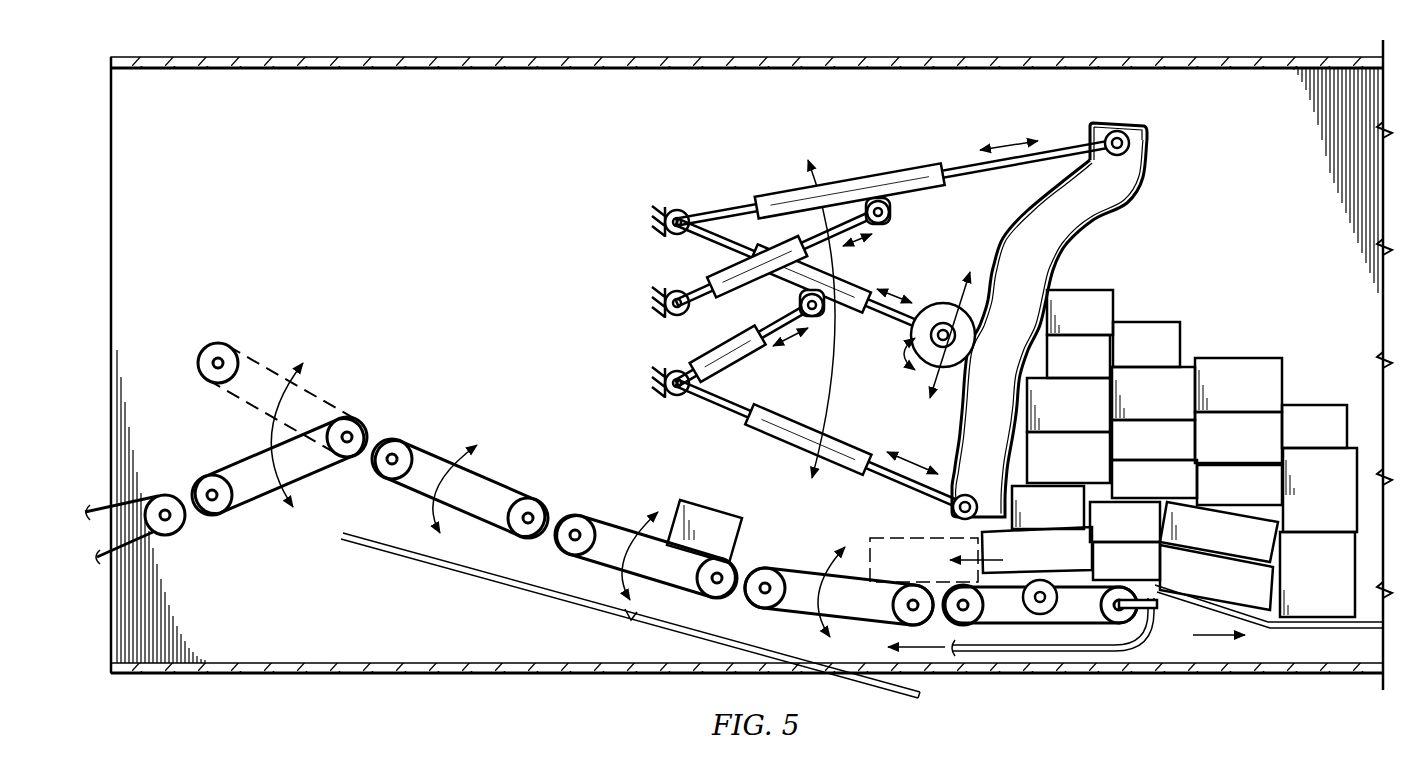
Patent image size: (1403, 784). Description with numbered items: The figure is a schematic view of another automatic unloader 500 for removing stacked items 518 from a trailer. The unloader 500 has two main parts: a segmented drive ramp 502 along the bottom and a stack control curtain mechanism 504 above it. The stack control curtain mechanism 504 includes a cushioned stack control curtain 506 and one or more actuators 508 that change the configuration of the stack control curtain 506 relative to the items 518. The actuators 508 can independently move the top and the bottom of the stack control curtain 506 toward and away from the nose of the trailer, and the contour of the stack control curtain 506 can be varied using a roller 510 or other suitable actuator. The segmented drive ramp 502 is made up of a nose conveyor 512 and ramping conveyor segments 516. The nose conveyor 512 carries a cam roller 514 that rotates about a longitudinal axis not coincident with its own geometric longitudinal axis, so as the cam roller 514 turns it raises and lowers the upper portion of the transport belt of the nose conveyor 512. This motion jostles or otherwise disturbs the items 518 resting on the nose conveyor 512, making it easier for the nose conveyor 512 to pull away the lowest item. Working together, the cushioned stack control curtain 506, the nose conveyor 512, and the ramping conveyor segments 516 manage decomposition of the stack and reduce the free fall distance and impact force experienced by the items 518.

The automatic unloader 500 is at (541, 130).
The segmented drive ramp 502 is at (440, 410).
The stack control curtain mechanism 504 is at (697, 160).
The cushioned stack control curtain 506 is at (1124, 203).
The actuators 508 is at (849, 158).
The roller 510 is at (942, 302).
The nose conveyor 512 is at (1003, 628).
The cam roller 514 is at (1063, 614).
The ramping conveyor segments 516 is at (630, 627).
The items 518 is at (1201, 325).